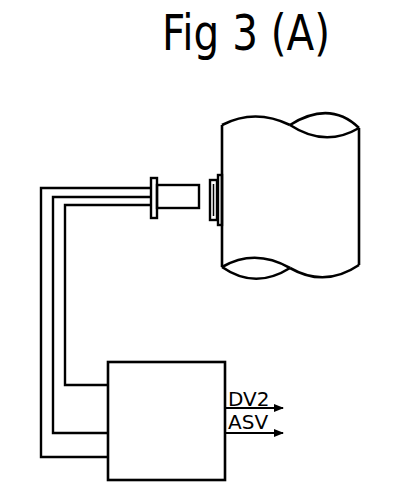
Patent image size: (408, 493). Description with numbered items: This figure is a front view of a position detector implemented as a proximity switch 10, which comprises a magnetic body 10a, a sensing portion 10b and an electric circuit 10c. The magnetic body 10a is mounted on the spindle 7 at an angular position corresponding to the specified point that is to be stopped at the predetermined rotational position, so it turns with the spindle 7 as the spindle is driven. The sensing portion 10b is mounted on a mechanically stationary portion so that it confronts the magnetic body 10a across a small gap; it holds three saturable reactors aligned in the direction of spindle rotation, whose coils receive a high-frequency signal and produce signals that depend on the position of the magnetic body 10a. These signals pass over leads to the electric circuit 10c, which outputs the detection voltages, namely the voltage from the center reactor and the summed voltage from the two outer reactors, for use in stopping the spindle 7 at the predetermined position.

The spindle 7 is at (290, 263).
The proximity switch 10 is at (132, 275).
The magnetic body 10a is at (212, 176).
The sensing portion 10b is at (180, 212).
The electric circuit 10c is at (165, 362).